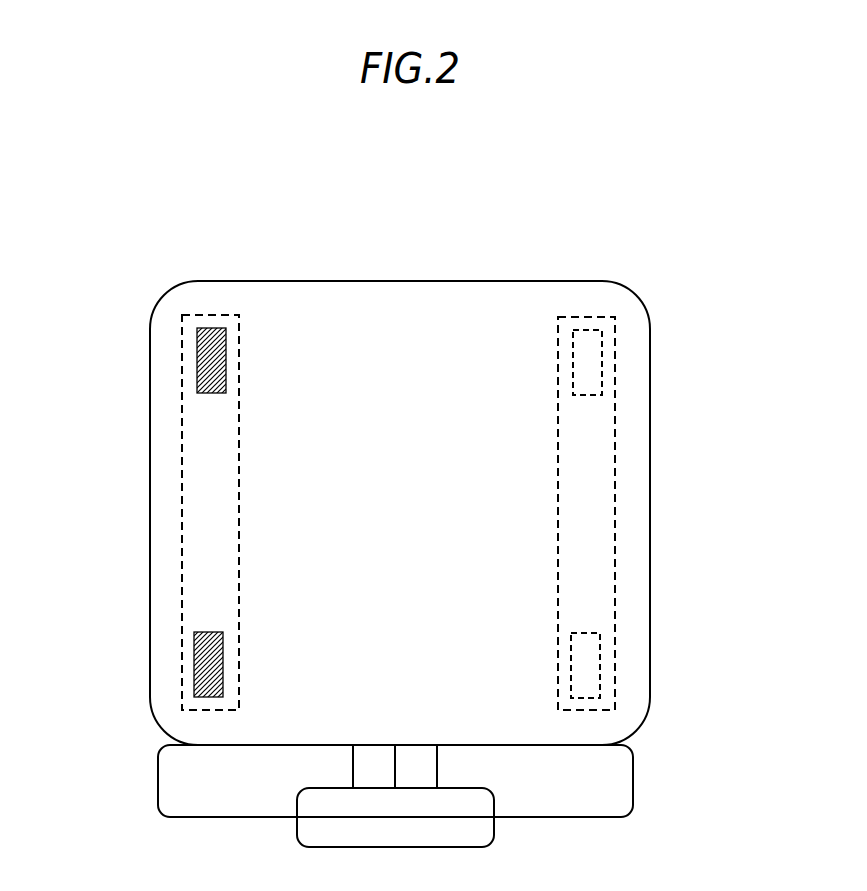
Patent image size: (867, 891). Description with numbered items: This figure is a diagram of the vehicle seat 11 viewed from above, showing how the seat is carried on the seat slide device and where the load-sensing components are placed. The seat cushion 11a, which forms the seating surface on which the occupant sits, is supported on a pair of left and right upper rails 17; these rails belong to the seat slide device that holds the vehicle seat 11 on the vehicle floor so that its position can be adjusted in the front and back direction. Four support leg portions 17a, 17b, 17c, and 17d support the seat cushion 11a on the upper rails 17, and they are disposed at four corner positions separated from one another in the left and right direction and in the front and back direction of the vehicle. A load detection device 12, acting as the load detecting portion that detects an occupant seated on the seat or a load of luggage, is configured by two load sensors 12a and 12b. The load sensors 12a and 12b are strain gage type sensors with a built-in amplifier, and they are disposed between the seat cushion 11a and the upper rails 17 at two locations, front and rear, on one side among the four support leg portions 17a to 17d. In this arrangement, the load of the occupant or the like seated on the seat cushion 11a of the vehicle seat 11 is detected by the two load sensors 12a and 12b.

The vehicle seat 11 is at (324, 269).
The seat cushion 11a is at (452, 302).
The load detection device 12 is at (623, 624).
The load sensor 12a is at (198, 370).
The load sensor 12b is at (195, 650).
The upper rails 17 is at (195, 495).
The support leg portion 17a is at (184, 339).
The support leg portion 17b is at (608, 358).
The support leg portion 17c is at (184, 682).
The support leg portion 17d is at (611, 674).